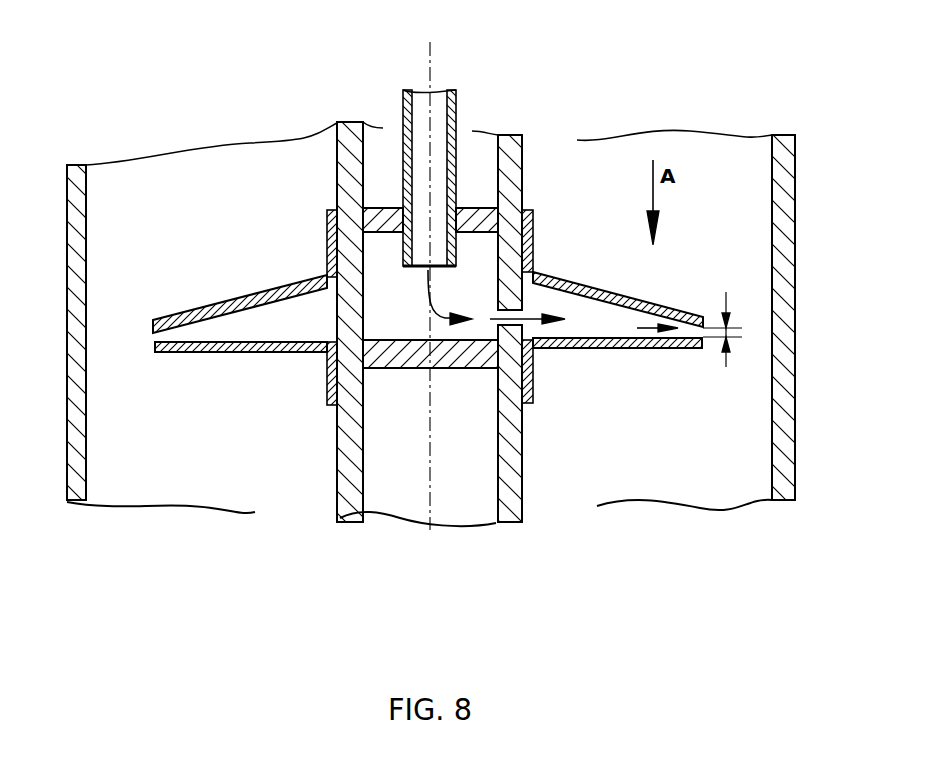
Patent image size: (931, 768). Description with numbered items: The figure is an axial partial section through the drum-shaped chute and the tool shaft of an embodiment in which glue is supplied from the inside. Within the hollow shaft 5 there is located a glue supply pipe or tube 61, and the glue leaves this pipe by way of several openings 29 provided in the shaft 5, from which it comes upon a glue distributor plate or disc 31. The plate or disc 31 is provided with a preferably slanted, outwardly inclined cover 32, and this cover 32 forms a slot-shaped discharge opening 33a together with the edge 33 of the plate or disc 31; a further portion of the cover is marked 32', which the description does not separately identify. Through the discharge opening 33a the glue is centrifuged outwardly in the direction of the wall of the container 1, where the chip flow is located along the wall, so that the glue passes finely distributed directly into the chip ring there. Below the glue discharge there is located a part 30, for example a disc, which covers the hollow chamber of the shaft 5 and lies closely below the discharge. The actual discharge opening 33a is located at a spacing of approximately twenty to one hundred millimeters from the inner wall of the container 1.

The container 1 is at (779, 497).
The hollow shaft 5 is at (518, 522).
The openings 29 is at (528, 319).
The covering part 30 is at (448, 356).
The glue distributor plate 31 is at (267, 353).
The cover 32 is at (240, 207).
The baffle plate edge 32' is at (155, 207).
The edge of the plate 33 is at (193, 353).
The slot-shaped discharge opening 33a is at (738, 332).
The glue supply pipe 61 is at (457, 90).